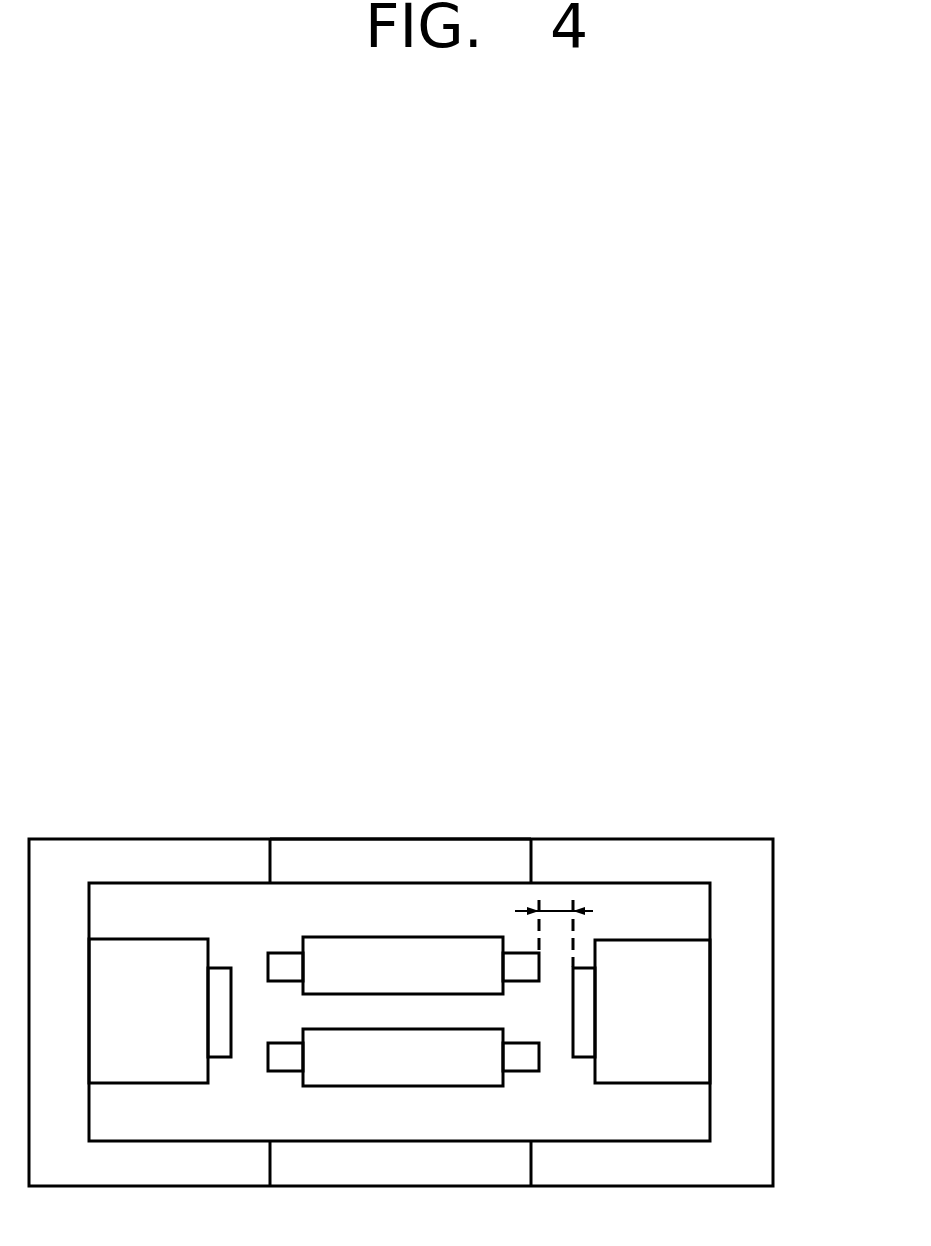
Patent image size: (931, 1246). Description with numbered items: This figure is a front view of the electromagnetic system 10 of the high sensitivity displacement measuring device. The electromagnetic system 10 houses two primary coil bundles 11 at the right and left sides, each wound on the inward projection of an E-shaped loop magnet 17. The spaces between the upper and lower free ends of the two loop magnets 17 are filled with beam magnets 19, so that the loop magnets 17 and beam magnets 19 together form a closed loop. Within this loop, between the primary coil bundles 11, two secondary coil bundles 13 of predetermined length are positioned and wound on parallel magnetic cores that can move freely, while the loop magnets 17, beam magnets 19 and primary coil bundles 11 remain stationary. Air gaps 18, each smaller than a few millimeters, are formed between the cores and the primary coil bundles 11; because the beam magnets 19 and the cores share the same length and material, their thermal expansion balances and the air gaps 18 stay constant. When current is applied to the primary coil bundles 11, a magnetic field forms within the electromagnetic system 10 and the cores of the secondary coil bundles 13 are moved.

The electromagnetic system 10 is at (875, 775).
The primary coil bundle 11 is at (680, 988).
The secondary coil bundle 13 is at (447, 965).
The loop magnet 17 is at (672, 852).
The air gap 18 is at (283, 967).
The beam magnet 19 is at (300, 853).